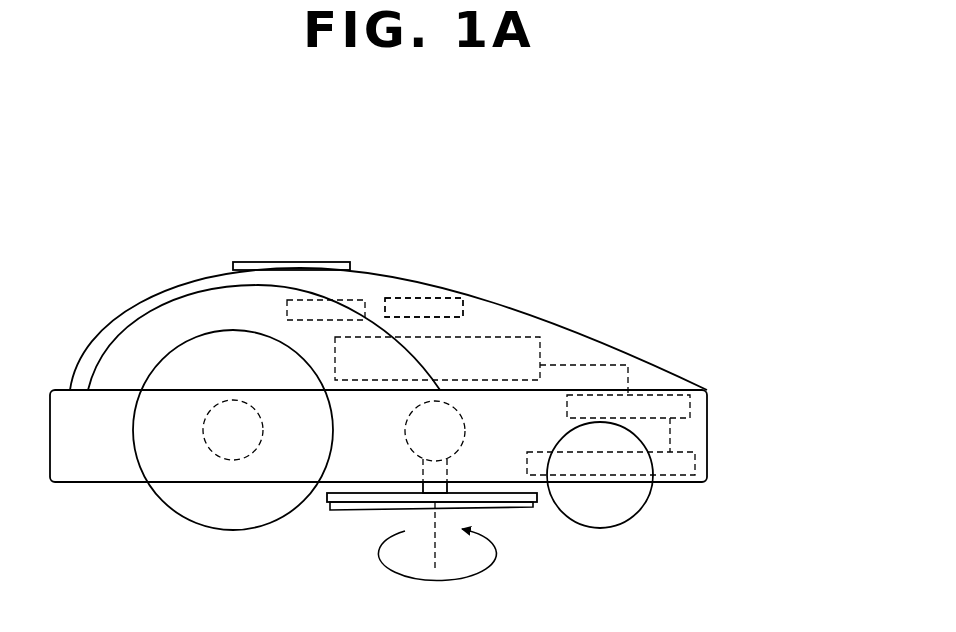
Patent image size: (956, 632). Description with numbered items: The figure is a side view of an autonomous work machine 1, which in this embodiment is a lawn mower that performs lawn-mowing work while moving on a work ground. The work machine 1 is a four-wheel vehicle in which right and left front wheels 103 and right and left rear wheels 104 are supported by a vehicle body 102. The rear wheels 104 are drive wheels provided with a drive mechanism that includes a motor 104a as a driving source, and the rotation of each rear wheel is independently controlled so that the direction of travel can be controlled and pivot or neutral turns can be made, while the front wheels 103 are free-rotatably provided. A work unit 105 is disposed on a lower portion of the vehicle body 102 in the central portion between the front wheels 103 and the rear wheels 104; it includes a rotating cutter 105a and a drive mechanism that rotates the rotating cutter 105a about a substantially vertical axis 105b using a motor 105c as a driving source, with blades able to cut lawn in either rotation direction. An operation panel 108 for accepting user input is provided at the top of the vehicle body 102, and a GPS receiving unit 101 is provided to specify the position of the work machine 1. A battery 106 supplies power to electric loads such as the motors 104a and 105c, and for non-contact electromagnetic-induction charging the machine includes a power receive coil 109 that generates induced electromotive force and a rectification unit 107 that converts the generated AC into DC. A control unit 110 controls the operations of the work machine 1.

The autonomous work machine 1 is at (205, 177).
The GPS receiving unit 101 is at (341, 300).
The vehicle body 102 is at (433, 285).
The front wheels 103 is at (592, 528).
The rear wheels 104 is at (247, 530).
The motor 104a is at (229, 400).
The work unit 105 is at (334, 543).
The rotating cutter 105a is at (372, 508).
The axis 105b is at (440, 553).
The motor 105c is at (466, 428).
The battery 106 is at (528, 337).
The rectification unit 107 is at (698, 400).
The operation panel 108 is at (298, 262).
The power receive coil 109 is at (698, 455).
The control unit 110 is at (400, 298).